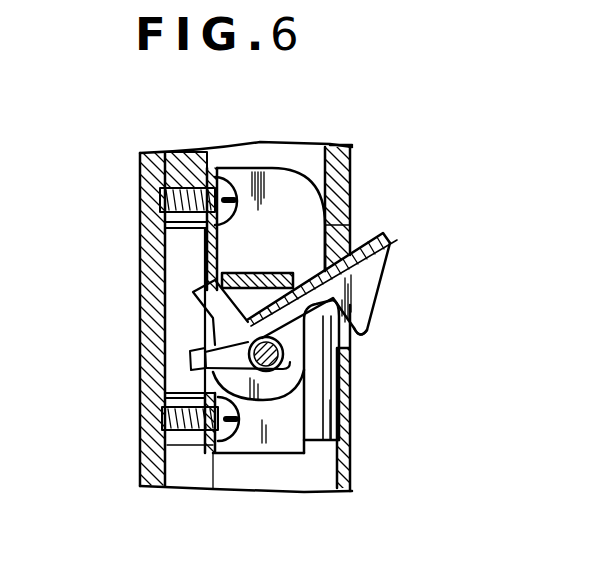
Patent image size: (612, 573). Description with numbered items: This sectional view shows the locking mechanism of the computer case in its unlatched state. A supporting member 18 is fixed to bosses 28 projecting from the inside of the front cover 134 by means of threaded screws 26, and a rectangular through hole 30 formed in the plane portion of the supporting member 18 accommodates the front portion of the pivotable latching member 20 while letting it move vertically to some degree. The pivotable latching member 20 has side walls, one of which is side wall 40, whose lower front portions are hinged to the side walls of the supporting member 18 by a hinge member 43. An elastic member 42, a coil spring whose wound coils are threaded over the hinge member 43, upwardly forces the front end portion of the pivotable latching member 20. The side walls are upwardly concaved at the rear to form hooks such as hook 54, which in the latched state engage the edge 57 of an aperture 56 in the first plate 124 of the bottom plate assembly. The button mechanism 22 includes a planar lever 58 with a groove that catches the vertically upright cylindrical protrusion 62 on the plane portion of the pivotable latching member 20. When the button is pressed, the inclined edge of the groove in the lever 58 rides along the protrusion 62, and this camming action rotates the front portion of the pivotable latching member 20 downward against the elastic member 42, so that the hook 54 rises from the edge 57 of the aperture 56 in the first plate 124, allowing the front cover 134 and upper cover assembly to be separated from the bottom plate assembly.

The supporting member 18 is at (232, 230).
The pivotable latching member 20 is at (322, 362).
The button mechanism 22 is at (281, 257).
The threaded screws 26 is at (157, 203).
The bosses 28 is at (175, 167).
The rectangular through hole 30 is at (157, 260).
The side wall 40 is at (333, 447).
The elastic member 42 is at (260, 402).
The hinge member 43 is at (384, 230).
The hook 54 is at (370, 280).
The aperture 56 is at (353, 242).
The edge 57 is at (357, 347).
The lever 58 is at (266, 337).
The protrusion 62 is at (210, 313).
The first plate 124 is at (352, 175).
The front cover 134 is at (153, 323).